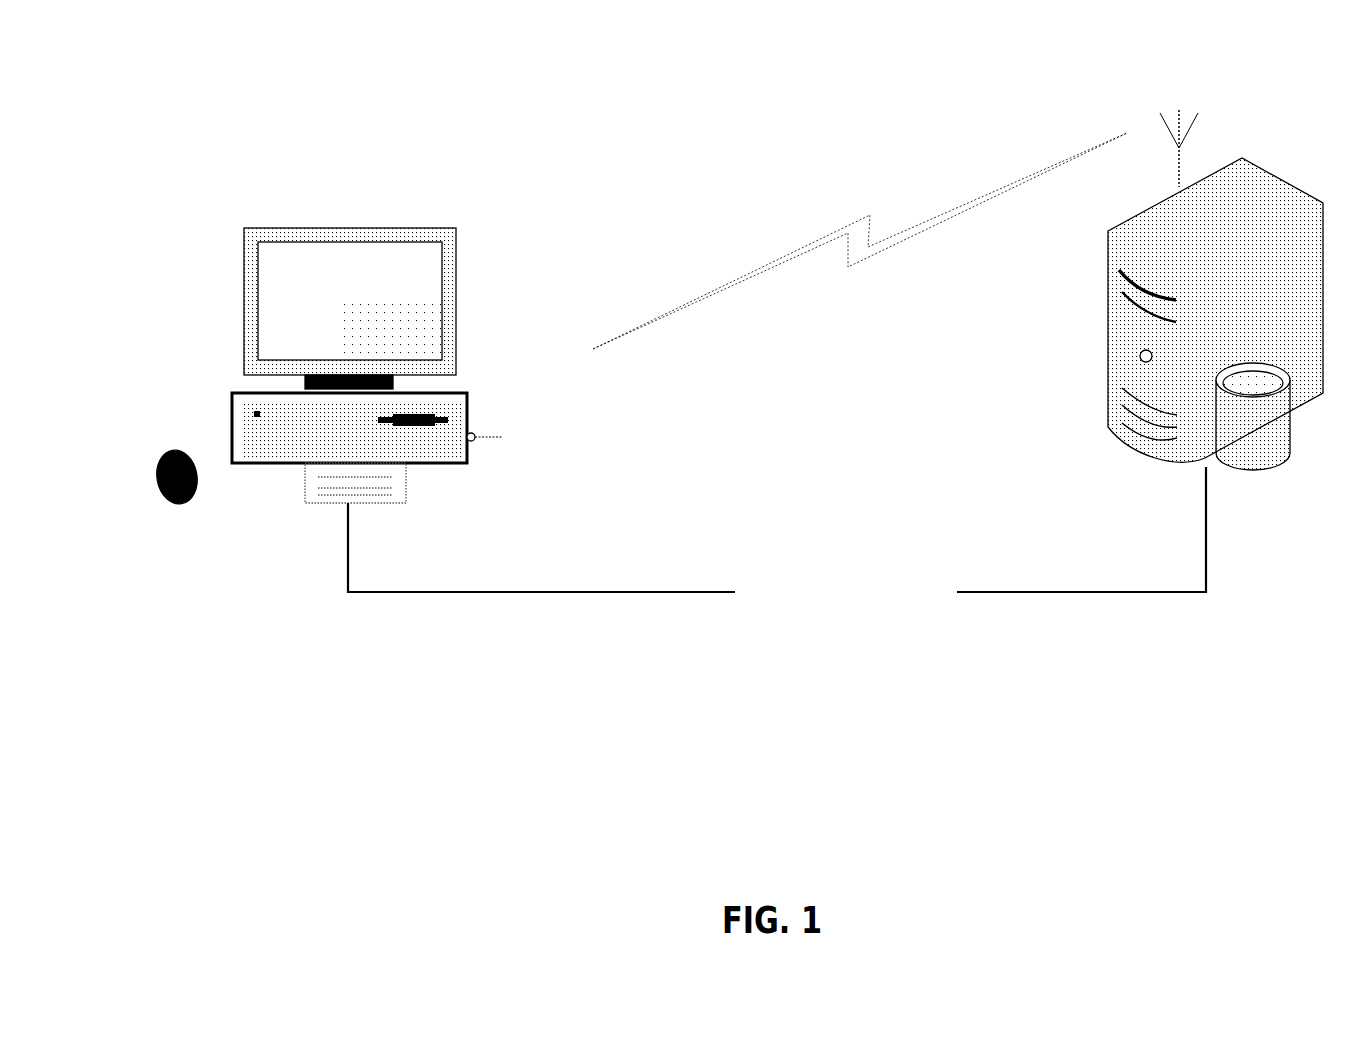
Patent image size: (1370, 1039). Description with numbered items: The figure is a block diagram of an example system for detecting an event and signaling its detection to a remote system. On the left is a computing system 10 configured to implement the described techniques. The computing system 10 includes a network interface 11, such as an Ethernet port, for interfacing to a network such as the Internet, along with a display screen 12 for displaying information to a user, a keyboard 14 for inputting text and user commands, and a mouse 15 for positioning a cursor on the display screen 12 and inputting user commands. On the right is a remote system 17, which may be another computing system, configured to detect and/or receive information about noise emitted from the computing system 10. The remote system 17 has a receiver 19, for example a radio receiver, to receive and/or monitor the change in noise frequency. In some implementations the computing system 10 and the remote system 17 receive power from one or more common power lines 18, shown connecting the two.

The computing system 10 is at (225, 217).
The network interface 11 is at (485, 440).
The display screen 12 is at (337, 252).
The keyboard 14 is at (320, 507).
The mouse 15 is at (153, 480).
The remote system 17 is at (1292, 148).
The common power lines 18 is at (615, 592).
The receiver 19 is at (1180, 102).